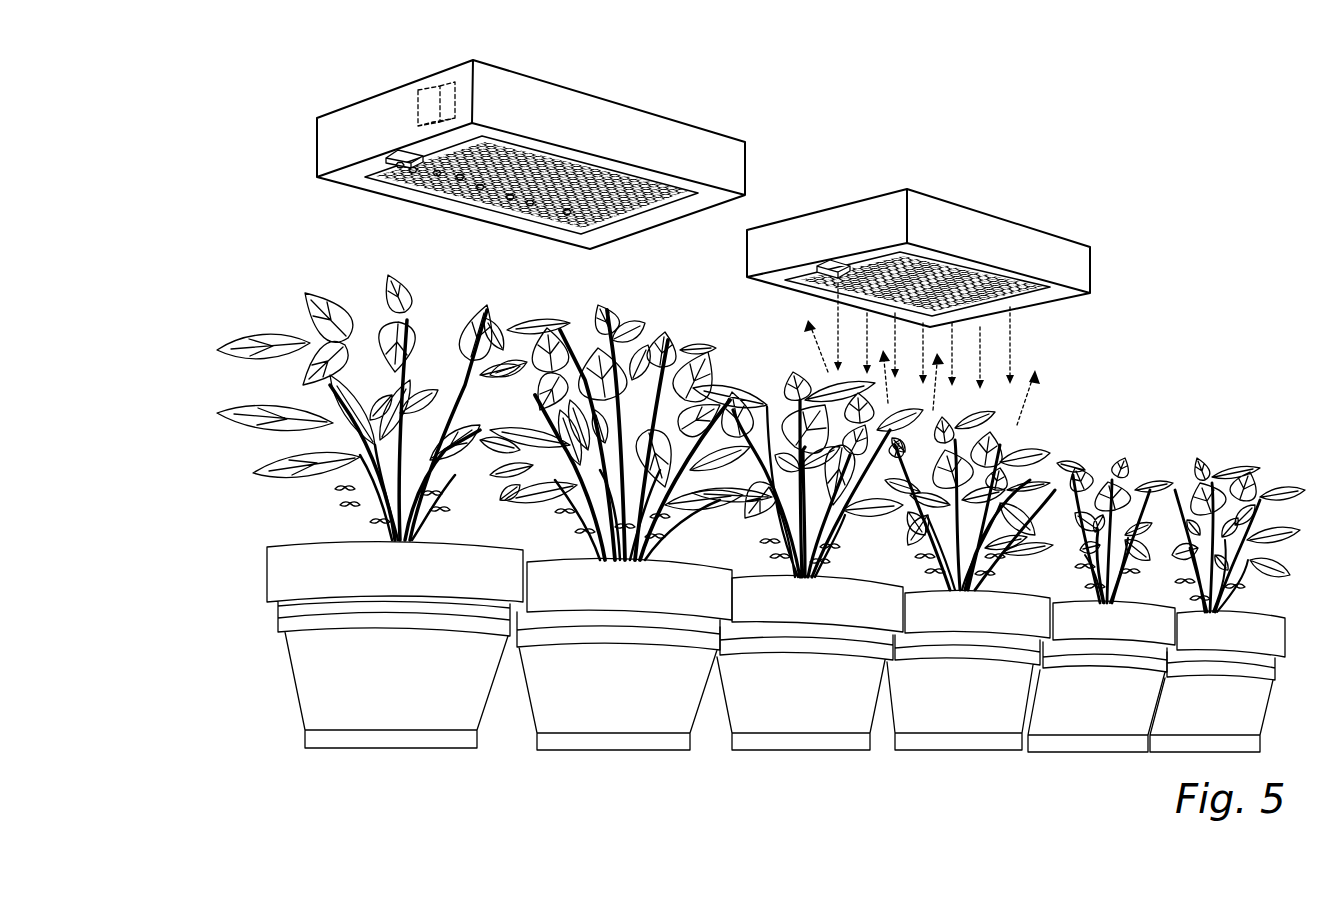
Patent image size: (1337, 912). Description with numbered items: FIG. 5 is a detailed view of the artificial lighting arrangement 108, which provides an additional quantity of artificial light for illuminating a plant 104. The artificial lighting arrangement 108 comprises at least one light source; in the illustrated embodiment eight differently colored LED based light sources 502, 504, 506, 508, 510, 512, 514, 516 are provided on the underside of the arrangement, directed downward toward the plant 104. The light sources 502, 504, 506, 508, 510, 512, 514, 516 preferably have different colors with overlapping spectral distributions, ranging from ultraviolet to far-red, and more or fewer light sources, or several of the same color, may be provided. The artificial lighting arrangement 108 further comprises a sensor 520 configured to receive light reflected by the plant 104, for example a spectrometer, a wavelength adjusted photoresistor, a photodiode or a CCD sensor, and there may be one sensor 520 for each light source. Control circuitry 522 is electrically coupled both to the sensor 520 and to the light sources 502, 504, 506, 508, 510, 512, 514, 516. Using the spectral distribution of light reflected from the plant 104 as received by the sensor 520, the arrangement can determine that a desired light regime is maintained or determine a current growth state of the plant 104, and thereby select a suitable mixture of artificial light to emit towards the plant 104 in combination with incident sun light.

The plant 104 is at (252, 424).
The artificial lighting arrangement 108 is at (637, 107).
The LED based light source 502 is at (400, 166).
The LED based light source 504 is at (413, 171).
The LED based light source 506 is at (437, 174).
The LED based light source 508 is at (460, 178).
The LED based light source 510 is at (480, 188).
The LED based light source 512 is at (510, 198).
The LED based light source 514 is at (530, 204).
The LED based light source 516 is at (567, 213).
The sensor 520 is at (400, 162).
The control circuitry 522 is at (452, 98).